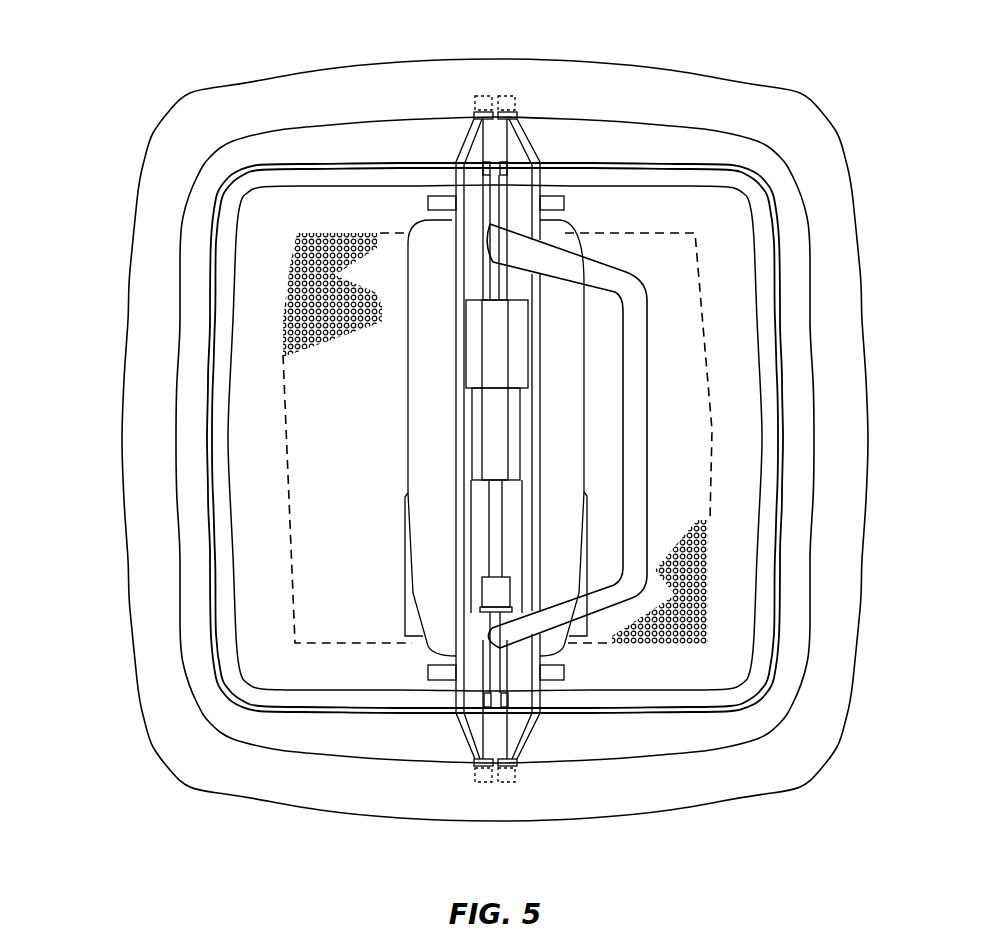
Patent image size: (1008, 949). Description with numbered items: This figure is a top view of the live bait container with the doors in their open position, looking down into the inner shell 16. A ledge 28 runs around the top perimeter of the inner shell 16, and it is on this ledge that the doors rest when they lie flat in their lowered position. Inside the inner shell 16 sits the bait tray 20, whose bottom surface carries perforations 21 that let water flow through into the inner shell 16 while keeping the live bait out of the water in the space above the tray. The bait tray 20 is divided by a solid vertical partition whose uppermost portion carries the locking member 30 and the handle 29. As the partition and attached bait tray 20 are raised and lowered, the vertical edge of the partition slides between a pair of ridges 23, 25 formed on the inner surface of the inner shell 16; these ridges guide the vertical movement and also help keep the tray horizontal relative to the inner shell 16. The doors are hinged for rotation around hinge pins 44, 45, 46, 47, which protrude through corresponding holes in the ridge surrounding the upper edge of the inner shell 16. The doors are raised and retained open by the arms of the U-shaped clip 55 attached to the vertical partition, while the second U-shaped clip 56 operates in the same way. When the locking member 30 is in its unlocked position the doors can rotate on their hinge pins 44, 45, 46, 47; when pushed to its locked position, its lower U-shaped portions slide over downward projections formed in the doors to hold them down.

The inner shell 16 is at (275, 92).
The ledge 28 is at (188, 473).
The bait tray 20 is at (265, 658).
The perforations 21 is at (287, 280).
The ridge 23 is at (483, 170).
The ridge 25 is at (523, 167).
The hinge pin 44 is at (478, 96).
The hinge pin 45 is at (516, 97).
The hinge pin 46 is at (475, 782).
The hinge pin 47 is at (518, 782).
The second U-shaped clip 56 is at (562, 203).
The U-shaped clip 55 is at (428, 673).
The locking member 30 is at (477, 355).
The handle 29 is at (648, 363).